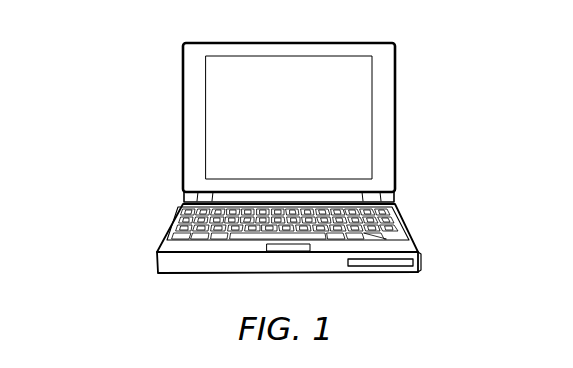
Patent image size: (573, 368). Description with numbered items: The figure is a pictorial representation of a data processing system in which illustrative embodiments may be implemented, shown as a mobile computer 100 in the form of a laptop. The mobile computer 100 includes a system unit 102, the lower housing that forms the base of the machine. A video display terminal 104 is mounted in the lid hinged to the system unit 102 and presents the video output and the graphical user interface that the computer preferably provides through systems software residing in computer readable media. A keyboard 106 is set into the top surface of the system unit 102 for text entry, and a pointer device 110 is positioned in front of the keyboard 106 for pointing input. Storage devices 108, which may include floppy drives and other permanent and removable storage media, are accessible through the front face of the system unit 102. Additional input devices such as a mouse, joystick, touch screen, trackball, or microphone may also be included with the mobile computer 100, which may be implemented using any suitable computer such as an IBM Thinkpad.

The mobile computer 100 is at (120, 75).
The system unit 102 is at (160, 242).
The video display terminal 104 is at (372, 105).
The keyboard 106 is at (398, 217).
The storage devices 108 is at (380, 268).
The pointer device 110 is at (266, 245).